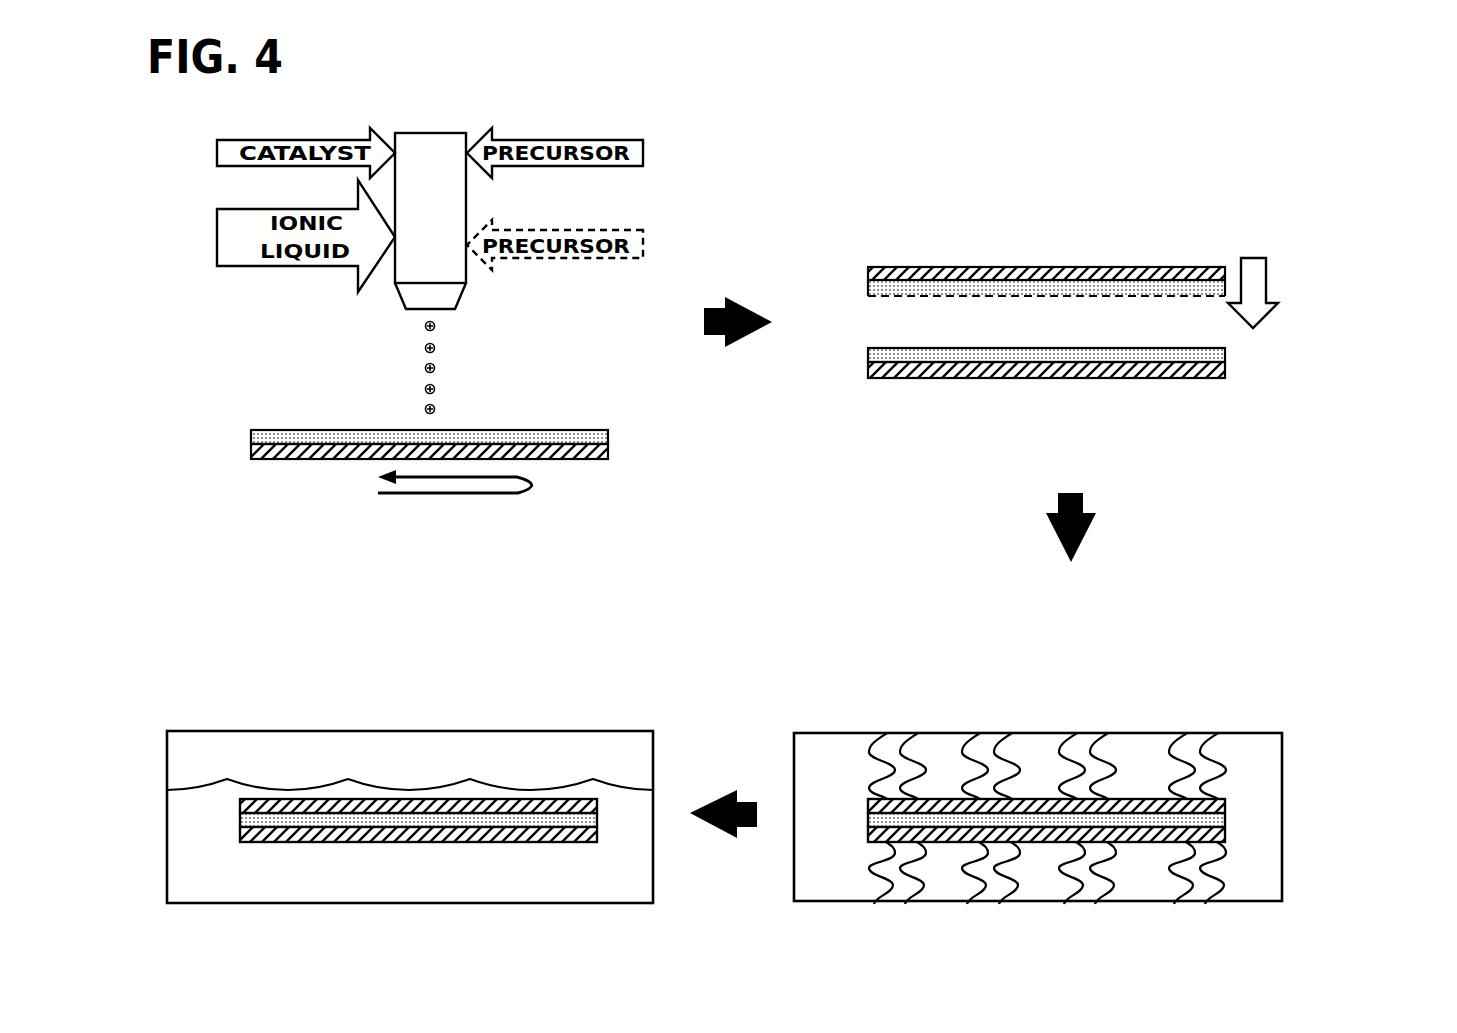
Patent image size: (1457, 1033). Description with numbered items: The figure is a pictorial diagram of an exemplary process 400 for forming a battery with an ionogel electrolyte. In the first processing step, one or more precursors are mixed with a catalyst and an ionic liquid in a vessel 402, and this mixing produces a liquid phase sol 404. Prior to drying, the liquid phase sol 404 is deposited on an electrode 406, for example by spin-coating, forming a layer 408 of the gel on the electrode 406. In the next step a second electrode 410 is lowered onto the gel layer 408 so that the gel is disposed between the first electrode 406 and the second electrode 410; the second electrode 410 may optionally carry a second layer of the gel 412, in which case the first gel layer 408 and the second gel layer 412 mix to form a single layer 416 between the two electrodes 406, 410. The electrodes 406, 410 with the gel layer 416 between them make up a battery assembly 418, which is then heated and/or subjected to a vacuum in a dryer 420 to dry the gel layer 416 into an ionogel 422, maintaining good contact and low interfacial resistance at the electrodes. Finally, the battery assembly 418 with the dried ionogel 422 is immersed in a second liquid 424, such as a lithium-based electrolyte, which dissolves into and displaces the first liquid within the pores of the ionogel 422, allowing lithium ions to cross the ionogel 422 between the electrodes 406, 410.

The process 400 is at (1340, 72).
The vessel 402 is at (457, 133).
The liquid phase sol 404 is at (435, 367).
The electrode 406 is at (610, 448).
The layer of gel 408 is at (548, 430).
The second electrode 410 is at (1077, 267).
The second layer of gel 412 is at (875, 288).
The single layer 416 is at (1225, 817).
The battery assembly 418 is at (848, 788).
The dryer 420 is at (1038, 733).
The ionogel 422 is at (240, 818).
The second liquid 424 is at (610, 783).